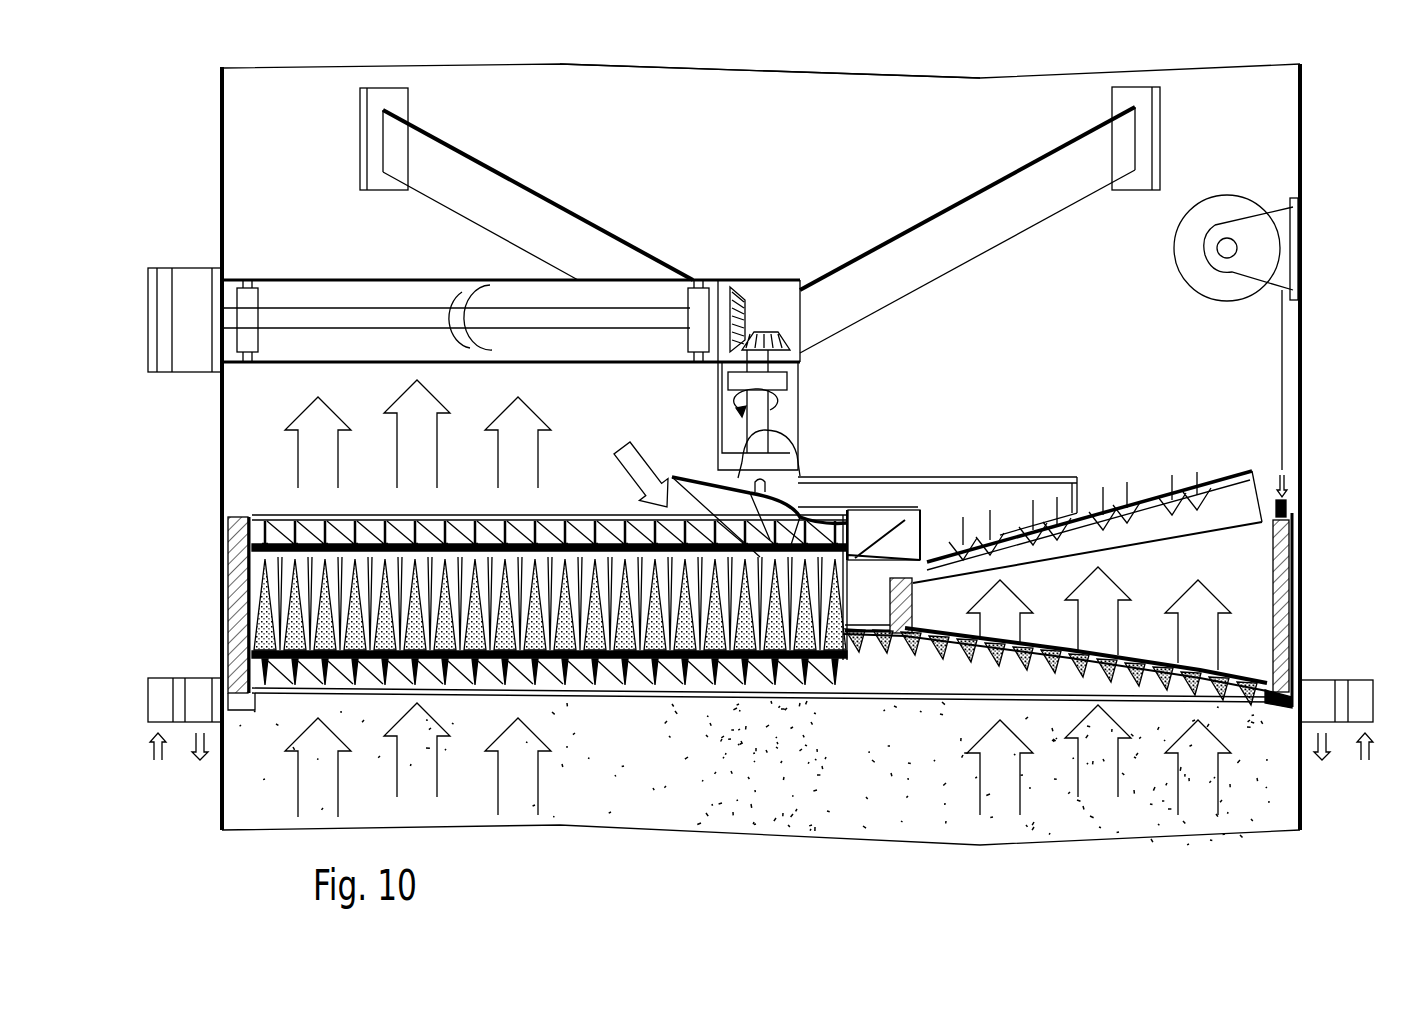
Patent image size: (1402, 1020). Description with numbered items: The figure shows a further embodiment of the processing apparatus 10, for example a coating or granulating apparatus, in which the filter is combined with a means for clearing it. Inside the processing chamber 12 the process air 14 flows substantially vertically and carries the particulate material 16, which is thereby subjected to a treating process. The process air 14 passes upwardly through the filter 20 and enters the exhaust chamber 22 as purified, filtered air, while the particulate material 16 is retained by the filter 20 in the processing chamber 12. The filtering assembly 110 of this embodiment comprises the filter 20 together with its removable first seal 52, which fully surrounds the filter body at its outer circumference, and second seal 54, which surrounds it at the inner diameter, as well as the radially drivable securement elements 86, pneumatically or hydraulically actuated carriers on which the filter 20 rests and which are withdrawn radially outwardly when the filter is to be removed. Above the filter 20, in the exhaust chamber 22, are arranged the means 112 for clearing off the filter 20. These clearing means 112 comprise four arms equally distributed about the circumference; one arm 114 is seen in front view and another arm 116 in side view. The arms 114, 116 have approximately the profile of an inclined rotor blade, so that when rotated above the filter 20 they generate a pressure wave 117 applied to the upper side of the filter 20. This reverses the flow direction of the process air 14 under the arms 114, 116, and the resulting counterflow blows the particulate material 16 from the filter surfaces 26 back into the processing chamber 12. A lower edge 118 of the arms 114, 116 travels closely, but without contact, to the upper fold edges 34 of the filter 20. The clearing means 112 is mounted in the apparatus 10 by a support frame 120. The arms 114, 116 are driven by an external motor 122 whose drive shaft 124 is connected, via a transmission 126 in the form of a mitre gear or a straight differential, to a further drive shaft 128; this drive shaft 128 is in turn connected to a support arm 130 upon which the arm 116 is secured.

The processing apparatus 10 is at (183, 176).
The processing chamber 12 is at (913, 790).
The process air 14 is at (532, 778).
The particulate material 16 is at (745, 765).
The filter 20 is at (287, 518).
The exhaust chamber 22 is at (895, 155).
The filter surfaces 26 is at (800, 595).
The upper fold edges 34 is at (1110, 535).
The first seal 52 is at (215, 578).
The second seal 54 is at (965, 480).
The securement elements 86 is at (238, 703).
The filtering assembly 110 is at (907, 428).
The means for clearing off the filter 112 is at (687, 468).
The arm 114 is at (747, 515).
The arm 116 is at (1158, 547).
The pressure wave 117 is at (623, 472).
The lower edge 118 is at (1220, 527).
The support frame 120 is at (595, 250).
The external motor 122 is at (178, 350).
The drive shaft 124 is at (298, 318).
The transmission 126 is at (765, 300).
The drive shaft 128 is at (740, 402).
The support arm 130 is at (918, 500).